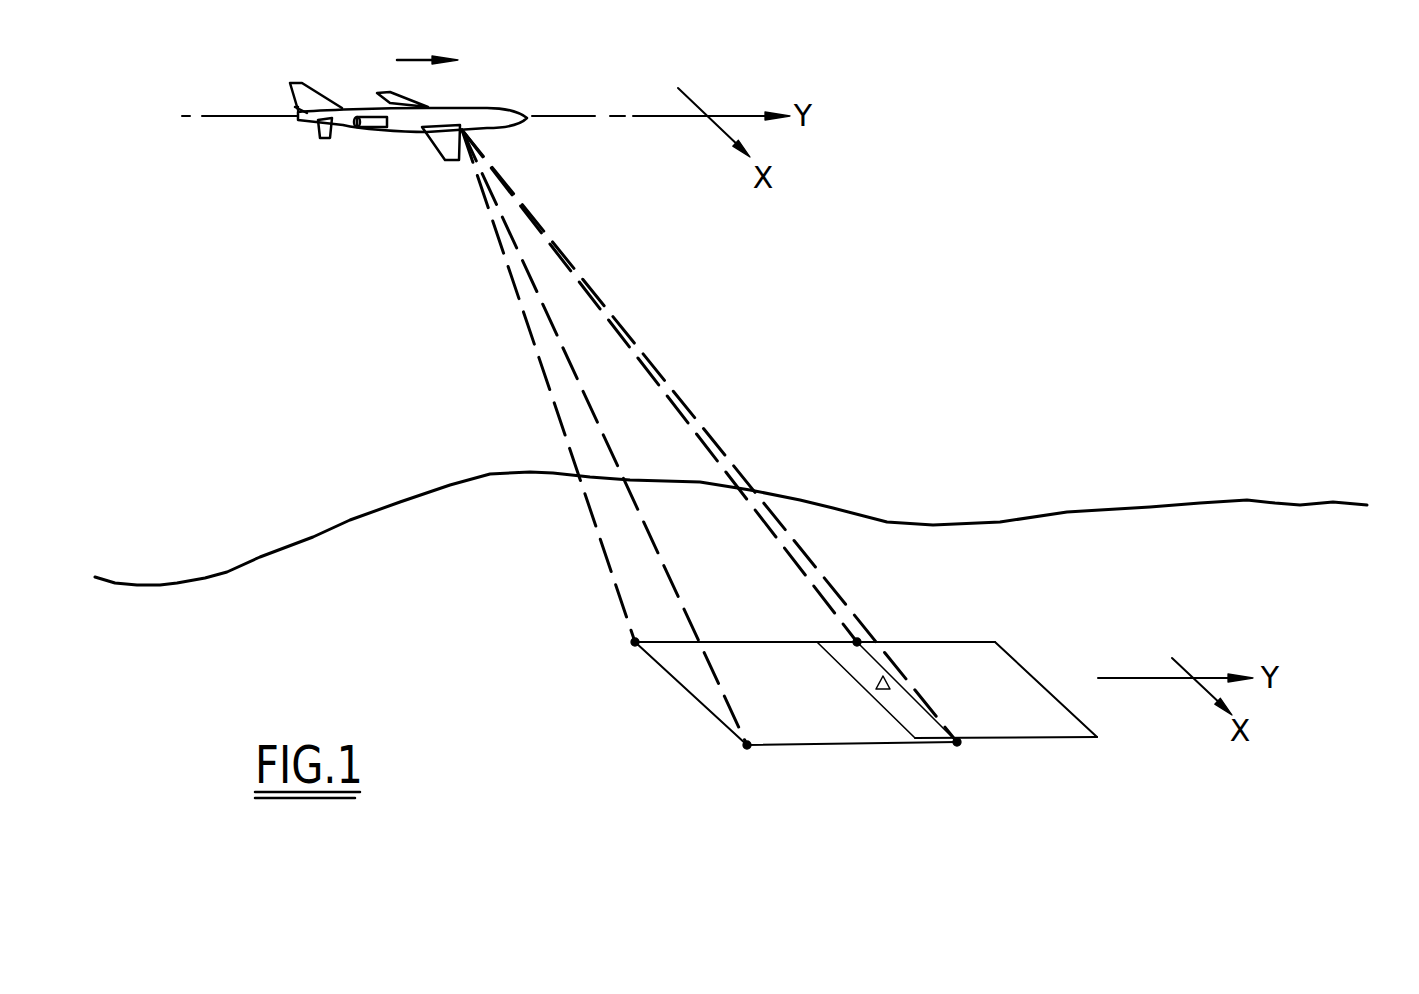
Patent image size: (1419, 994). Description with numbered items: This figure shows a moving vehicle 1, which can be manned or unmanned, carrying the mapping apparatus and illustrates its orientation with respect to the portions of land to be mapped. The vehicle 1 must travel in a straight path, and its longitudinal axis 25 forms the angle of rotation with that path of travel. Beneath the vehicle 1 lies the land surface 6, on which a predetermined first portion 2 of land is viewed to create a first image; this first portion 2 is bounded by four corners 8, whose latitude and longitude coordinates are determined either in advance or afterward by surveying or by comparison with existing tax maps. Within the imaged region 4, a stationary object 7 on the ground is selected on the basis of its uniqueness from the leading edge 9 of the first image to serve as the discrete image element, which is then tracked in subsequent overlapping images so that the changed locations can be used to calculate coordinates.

The vehicle 1 is at (489, 112).
The longitudinal axis 25 is at (243, 118).
The terrain surface 6 is at (1100, 510).
The four corners 8 is at (633, 640).
The first portion 2 is at (833, 747).
The ground scanning area 4 is at (1032, 688).
The stationary object 7 is at (875, 685).
The leading edge 9 is at (862, 650).